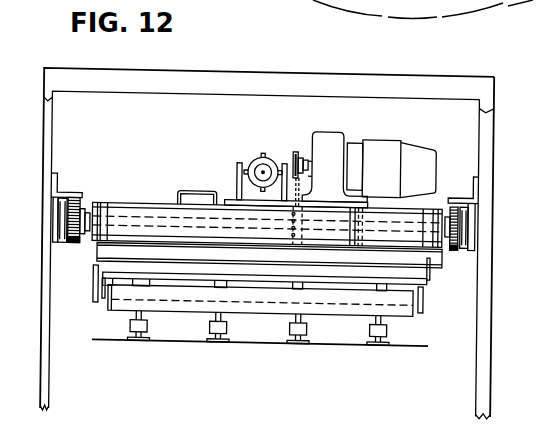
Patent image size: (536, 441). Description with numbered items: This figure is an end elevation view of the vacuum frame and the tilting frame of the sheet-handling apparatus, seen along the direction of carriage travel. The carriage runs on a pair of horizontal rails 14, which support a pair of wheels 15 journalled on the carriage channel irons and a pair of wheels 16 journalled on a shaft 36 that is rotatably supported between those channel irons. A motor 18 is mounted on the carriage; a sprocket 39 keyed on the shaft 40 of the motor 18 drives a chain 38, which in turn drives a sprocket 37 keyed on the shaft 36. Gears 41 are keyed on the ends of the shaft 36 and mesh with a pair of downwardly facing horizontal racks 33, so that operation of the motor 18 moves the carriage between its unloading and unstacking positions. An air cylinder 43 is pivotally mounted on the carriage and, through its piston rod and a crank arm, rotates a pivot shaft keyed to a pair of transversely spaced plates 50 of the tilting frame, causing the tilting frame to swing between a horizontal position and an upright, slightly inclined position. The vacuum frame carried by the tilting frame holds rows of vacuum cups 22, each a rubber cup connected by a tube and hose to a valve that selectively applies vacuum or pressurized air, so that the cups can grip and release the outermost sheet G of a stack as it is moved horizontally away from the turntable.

The horizontal rails 14 is at (475, 239).
The wheels 15 is at (60, 220).
The wheels 16 is at (470, 229).
The motor 18 is at (384, 136).
The vacuum cups 22 is at (211, 334).
The horizontal racks 33 is at (79, 191).
The shaft 36 is at (114, 211).
The sprocket 37 is at (296, 227).
The chain 38 is at (302, 184).
The sprocket 39 is at (302, 146).
The shaft 40 is at (296, 152).
The gears 41 is at (75, 242).
The air cylinder 43 is at (252, 152).
The plates 50 is at (99, 247).
The outermost sheet G is at (425, 338).